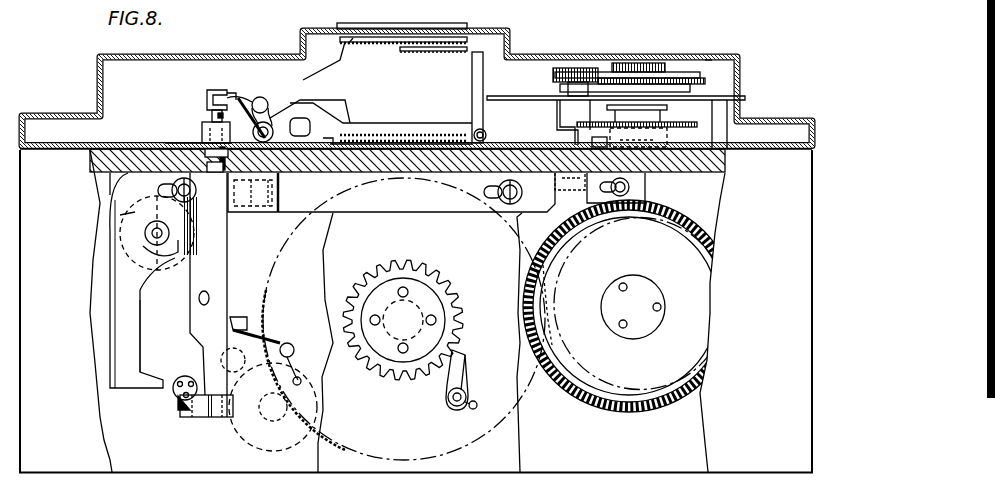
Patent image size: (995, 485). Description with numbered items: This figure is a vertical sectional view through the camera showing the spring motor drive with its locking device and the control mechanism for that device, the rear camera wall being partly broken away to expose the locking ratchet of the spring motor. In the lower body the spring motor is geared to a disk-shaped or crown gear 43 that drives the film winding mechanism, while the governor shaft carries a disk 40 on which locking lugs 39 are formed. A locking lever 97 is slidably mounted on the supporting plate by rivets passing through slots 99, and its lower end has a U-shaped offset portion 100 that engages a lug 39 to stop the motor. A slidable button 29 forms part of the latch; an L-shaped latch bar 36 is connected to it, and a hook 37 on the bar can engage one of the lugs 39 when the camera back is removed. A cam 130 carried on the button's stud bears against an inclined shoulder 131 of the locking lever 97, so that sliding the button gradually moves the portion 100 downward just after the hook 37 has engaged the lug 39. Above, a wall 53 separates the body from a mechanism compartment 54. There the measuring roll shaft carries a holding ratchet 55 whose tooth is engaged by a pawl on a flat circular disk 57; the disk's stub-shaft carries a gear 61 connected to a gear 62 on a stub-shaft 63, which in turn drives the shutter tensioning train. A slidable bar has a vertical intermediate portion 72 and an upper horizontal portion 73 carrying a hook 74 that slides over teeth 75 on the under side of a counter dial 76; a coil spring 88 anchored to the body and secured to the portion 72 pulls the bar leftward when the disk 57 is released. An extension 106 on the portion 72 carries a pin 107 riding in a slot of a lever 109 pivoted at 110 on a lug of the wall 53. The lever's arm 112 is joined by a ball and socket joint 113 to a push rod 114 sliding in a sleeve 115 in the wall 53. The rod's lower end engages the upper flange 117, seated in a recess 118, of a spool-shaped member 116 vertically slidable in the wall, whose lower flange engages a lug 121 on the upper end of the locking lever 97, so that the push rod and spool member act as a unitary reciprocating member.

The slidable button 29 is at (122, 236).
The L-shaped latch bar 36 is at (127, 192).
The hook 37 is at (160, 383).
The lugs 39 is at (182, 412).
The disk 40 is at (173, 395).
The crown gear 43 is at (648, 412).
The wall 53 is at (712, 165).
The mechanism compartment 54 is at (737, 81).
The holding ratchet 55 is at (670, 139).
The flat circular disk 57 is at (699, 129).
The gear 61 is at (712, 76).
The gear 62 is at (553, 74).
The stub-shaft 63 is at (578, 90).
The vertical intermediate portion 72 is at (472, 72).
The upper horizontal portion 73 is at (433, 51).
The hook 74 is at (400, 45).
The teeth 75 is at (353, 45).
The counter dial 76 is at (340, 37).
The coil spring 88 is at (385, 132).
The locking lever 97 is at (218, 273).
The slots 99 is at (198, 298).
The U-shaped offset portion 100 is at (200, 418).
The extension 106 is at (350, 115).
The pin 107 is at (270, 101).
The lever 109 is at (253, 99).
The pivot 110 is at (282, 122).
The arm 112 is at (231, 90).
The ball and socket joint 113 is at (207, 97).
The push rod 114 is at (211, 115).
The sleeve 115 is at (202, 131).
The spool-shaped member 116 is at (167, 143).
The upper flange 117 is at (173, 142).
The recess 118 is at (235, 175).
The lug 121 is at (250, 96).
The cam 130 is at (145, 248).
The inclined shoulder 131 is at (120, 212).